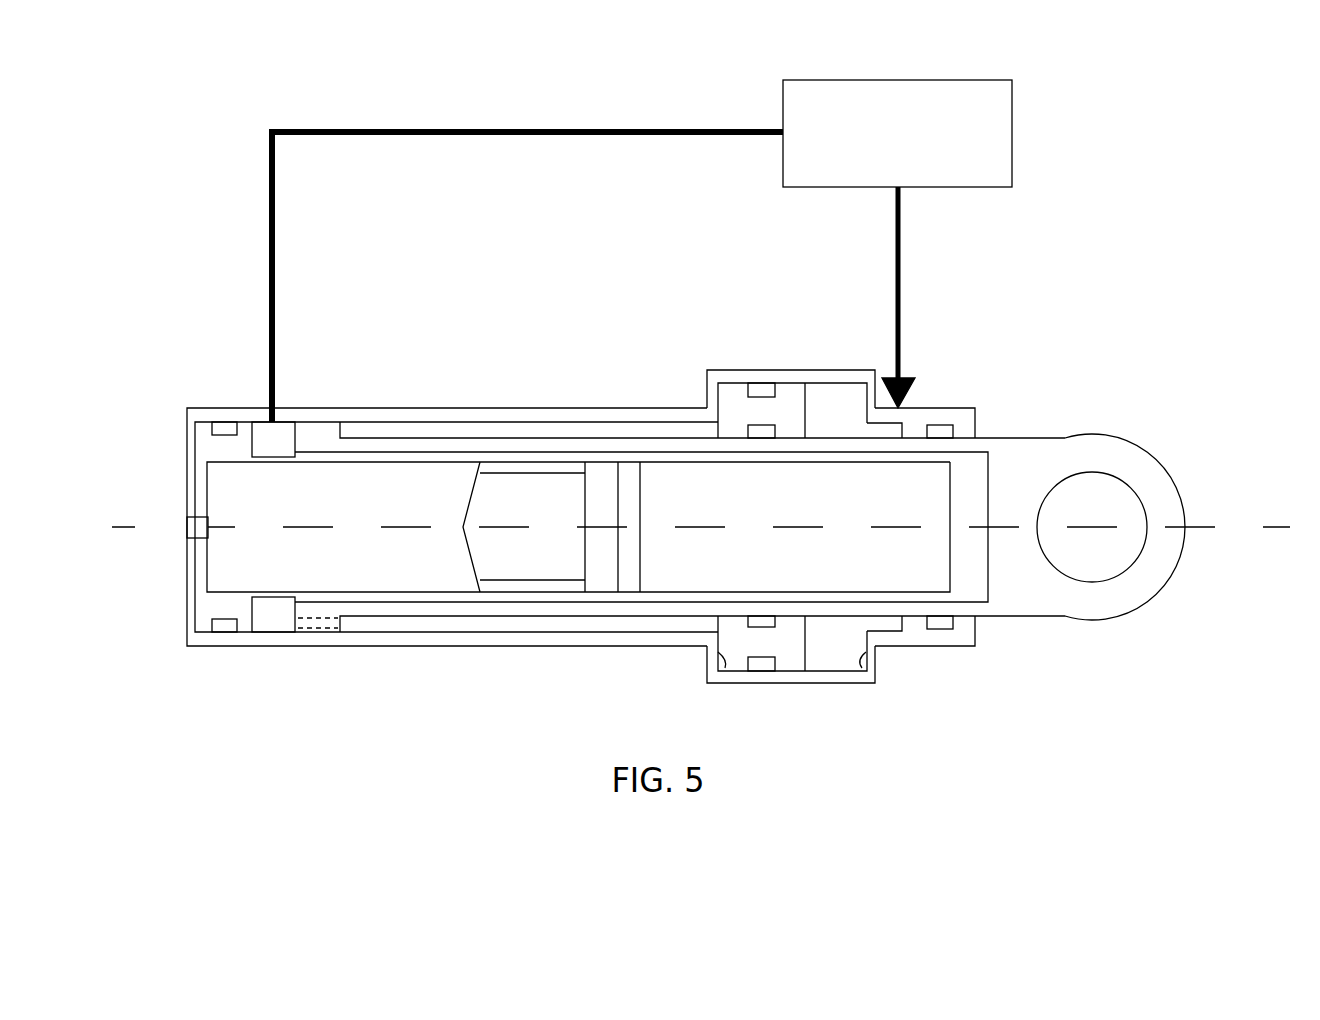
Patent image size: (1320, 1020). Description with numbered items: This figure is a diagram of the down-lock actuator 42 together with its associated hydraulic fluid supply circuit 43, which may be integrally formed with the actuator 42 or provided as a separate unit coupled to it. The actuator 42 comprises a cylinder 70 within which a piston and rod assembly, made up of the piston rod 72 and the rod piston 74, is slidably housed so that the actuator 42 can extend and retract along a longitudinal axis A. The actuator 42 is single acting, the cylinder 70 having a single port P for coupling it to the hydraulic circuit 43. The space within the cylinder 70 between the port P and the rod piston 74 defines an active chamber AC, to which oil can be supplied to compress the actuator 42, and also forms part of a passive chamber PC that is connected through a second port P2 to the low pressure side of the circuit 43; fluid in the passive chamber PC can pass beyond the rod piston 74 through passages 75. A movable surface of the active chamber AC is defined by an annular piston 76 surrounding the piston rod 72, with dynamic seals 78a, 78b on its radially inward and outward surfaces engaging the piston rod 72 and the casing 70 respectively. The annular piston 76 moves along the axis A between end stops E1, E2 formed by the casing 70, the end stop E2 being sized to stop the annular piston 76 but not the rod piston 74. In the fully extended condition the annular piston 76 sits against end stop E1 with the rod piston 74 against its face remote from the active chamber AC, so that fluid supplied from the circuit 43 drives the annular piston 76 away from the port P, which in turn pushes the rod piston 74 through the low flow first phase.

The hydraulic fluid supply circuit 43 is at (897, 244).
The down-lock actuator 42 is at (1068, 405).
The cylinder 70 is at (527, 647).
The piston rod 72 is at (472, 440).
The rod piston 74 is at (315, 430).
The passages 75 is at (318, 630).
The annular piston 76 is at (740, 412).
The dynamic seal 78a is at (760, 672).
The dynamic seal 78b is at (762, 627).
The second port P2 is at (262, 421).
The passive chamber PC is at (612, 430).
The active chamber AC is at (830, 415).
The port P is at (890, 418).
The end stop E2 is at (730, 652).
The end stop E1 is at (866, 660).
The longitudinal axis A is at (1275, 533).